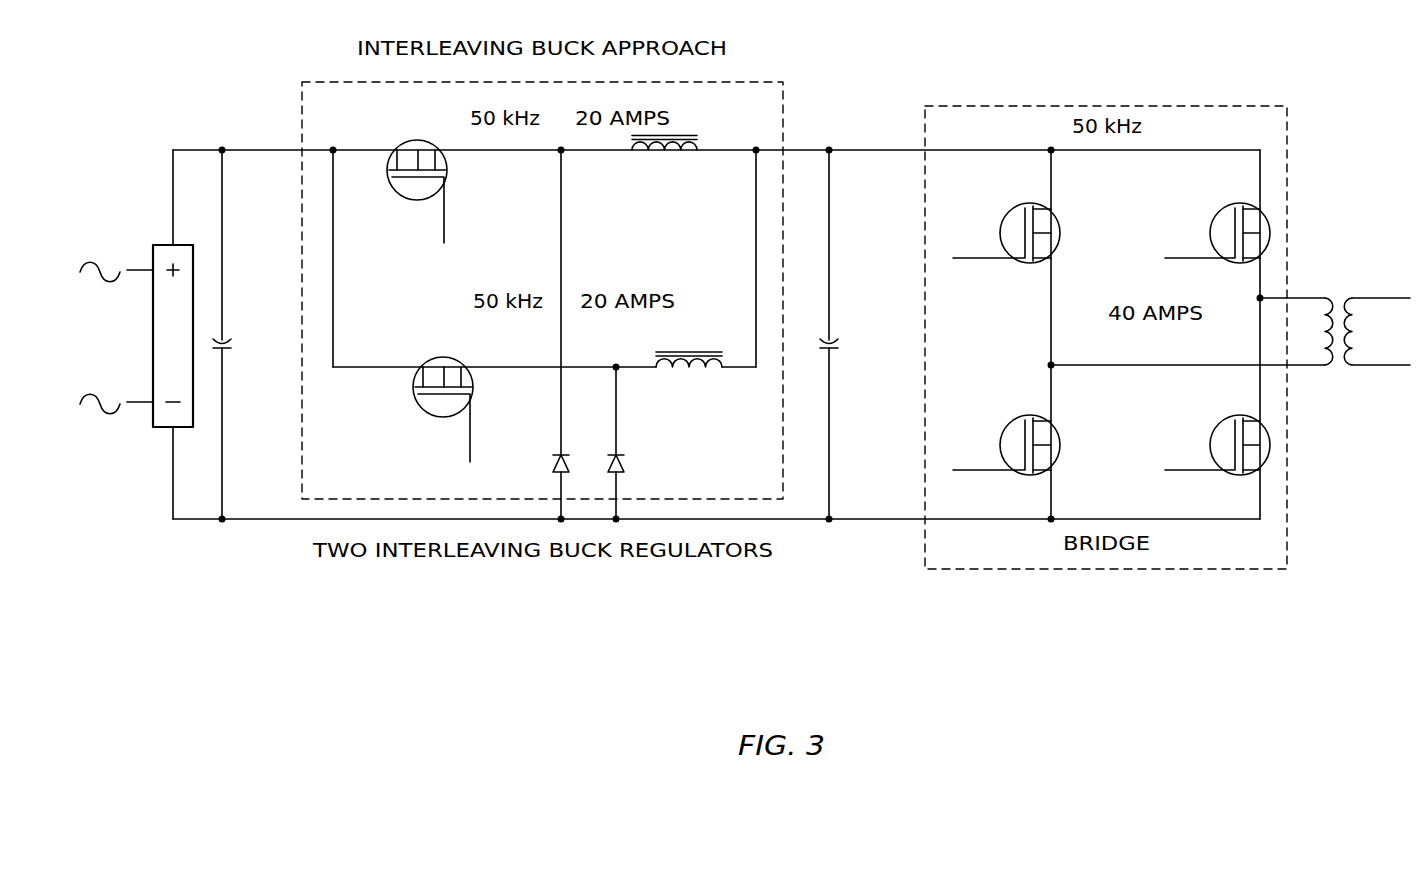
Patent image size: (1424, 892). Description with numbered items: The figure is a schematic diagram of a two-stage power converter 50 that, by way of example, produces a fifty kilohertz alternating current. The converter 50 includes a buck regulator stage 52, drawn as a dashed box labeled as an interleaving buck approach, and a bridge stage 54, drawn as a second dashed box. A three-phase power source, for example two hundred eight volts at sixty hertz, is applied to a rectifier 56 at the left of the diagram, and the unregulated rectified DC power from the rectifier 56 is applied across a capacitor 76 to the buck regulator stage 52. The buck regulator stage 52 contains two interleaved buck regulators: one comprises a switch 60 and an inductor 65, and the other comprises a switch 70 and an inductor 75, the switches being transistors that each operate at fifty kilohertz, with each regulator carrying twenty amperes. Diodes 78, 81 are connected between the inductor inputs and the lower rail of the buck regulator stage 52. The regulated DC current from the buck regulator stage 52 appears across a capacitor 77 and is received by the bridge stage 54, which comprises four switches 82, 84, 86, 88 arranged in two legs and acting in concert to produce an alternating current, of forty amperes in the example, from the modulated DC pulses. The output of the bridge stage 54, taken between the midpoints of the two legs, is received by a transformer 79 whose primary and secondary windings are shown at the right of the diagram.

The converter 50 is at (637, 628).
The buck regulator stage 52 is at (302, 102).
The bridge stage 54 is at (923, 117).
The rectifier 56 is at (152, 335).
The switch 60 is at (419, 200).
The inductor 65 is at (672, 152).
The switch 70 is at (445, 417).
The inductor 75 is at (700, 351).
The capacitor 76 is at (233, 344).
The capacitor 77 is at (842, 345).
The diode 78 is at (624, 466).
The transformer 79 is at (1338, 285).
The diode 81 is at (554, 466).
The switch 82 is at (1061, 233).
The switch 84 is at (1061, 445).
The switch 86 is at (1211, 445).
The switch 88 is at (1211, 232).